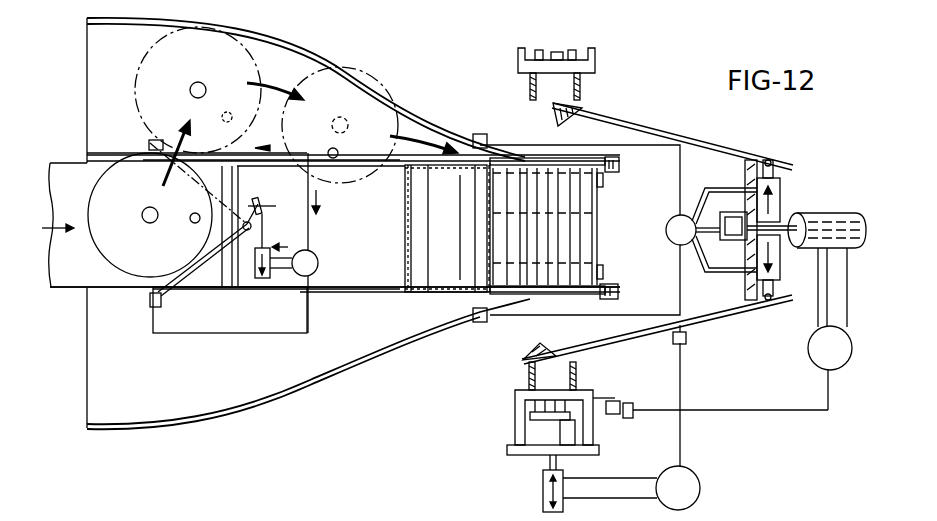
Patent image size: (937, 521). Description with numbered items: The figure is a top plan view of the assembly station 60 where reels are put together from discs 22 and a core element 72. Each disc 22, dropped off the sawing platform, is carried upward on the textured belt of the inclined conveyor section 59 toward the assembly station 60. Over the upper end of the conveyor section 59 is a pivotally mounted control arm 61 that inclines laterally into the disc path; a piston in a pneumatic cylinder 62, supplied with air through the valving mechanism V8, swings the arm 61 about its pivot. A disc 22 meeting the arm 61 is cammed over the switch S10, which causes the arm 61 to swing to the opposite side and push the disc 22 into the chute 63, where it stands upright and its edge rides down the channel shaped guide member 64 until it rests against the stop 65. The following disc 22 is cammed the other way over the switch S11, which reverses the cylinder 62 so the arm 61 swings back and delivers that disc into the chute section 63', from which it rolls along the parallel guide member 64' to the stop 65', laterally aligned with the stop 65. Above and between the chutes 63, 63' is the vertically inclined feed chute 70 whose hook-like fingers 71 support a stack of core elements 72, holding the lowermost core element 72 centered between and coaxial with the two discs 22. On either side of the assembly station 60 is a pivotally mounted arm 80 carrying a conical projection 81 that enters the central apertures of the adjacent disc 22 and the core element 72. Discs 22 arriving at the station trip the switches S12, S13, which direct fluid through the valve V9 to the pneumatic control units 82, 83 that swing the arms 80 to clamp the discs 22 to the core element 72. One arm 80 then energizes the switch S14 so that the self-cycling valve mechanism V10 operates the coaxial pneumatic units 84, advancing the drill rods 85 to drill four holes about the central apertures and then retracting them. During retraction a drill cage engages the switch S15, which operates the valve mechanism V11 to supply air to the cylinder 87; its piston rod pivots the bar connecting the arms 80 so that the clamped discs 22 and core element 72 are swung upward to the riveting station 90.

The disc 22 is at (148, 54).
The conveyor section 59 is at (62, 163).
The assembly station 60 is at (518, 321).
The control arm 61 is at (200, 278).
The pneumatic cylinder 62 is at (262, 280).
The chute 63 is at (306, 89).
The chute section 63' is at (308, 364).
The channel shaped guide member 64 is at (271, 182).
The channel formed guide member 64' is at (278, 308).
The stop 65 is at (577, 173).
The stop 65' is at (578, 279).
The feed chute 70 is at (404, 198).
The fingers 71 is at (592, 183).
The core element 72 is at (436, 233).
The arm 80 is at (680, 140).
The conical projection 81 is at (566, 119).
The pneumatic control unit 82 is at (780, 198).
The pneumatic control unit 83 is at (780, 255).
The pneumatic unit 84 is at (542, 492).
The drill rods 85 is at (584, 92).
The cylinder 87 is at (840, 214).
The riveting station 90 is at (752, 137).
The switch S10 is at (148, 139).
The switch S11 is at (149, 304).
The switch S12 is at (479, 134).
The switch S13 is at (474, 322).
The switch S14 is at (686, 339).
The switch S15 is at (636, 403).
The valving mechanism V8 is at (294, 263).
The valve V9 is at (711, 230).
The self-cycling valve mechanism V10 is at (631, 426).
The valve mechanism V11 is at (830, 329).